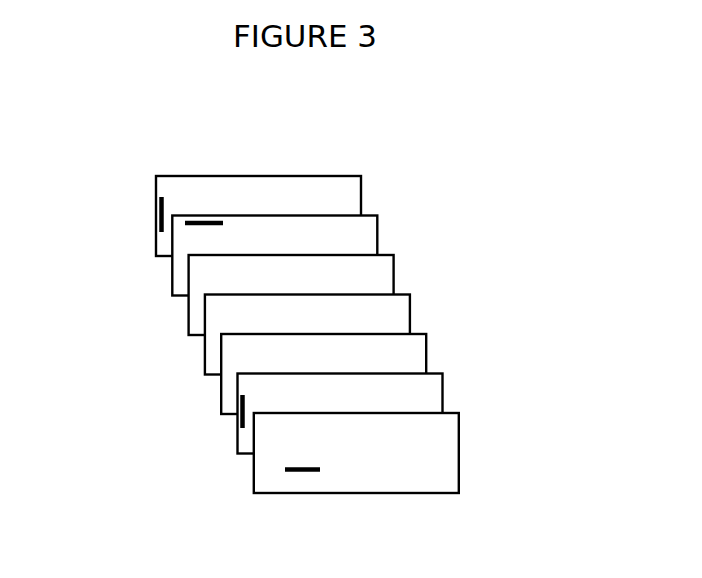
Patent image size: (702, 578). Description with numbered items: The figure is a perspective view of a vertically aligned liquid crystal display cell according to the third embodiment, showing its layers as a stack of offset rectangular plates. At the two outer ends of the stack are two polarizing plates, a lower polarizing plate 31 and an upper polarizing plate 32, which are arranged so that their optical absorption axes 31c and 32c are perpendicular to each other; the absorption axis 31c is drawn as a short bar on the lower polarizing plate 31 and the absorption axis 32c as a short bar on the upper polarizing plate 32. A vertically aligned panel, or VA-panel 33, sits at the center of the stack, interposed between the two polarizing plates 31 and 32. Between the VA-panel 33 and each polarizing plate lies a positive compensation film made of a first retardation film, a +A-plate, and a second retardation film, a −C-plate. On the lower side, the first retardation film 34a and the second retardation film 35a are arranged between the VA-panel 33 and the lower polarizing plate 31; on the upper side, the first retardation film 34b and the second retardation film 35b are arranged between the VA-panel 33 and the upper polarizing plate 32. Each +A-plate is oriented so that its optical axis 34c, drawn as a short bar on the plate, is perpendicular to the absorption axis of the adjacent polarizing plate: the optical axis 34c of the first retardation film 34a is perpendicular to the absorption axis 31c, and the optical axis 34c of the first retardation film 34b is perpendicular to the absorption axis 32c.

The lower polarizing plate 31 is at (361, 191).
The optical absorption axis of lower polarizing plate 31c is at (158, 217).
The first retardation film (+A-plate) 34a is at (377, 236).
The optical axis of first retardation film 34c is at (186, 224).
The second retardation film (−C-plate) 35a is at (394, 276).
The vertically aligned panel (VA-panel) 33 is at (410, 311).
The second retardation film (−C-plate) 35b is at (426, 356).
The first retardation film (+A-plate) 34b is at (442, 393).
The upper polarizing plate 32 is at (459, 442).
The optical absorption axis of upper polarizing plate 32c is at (302, 471).